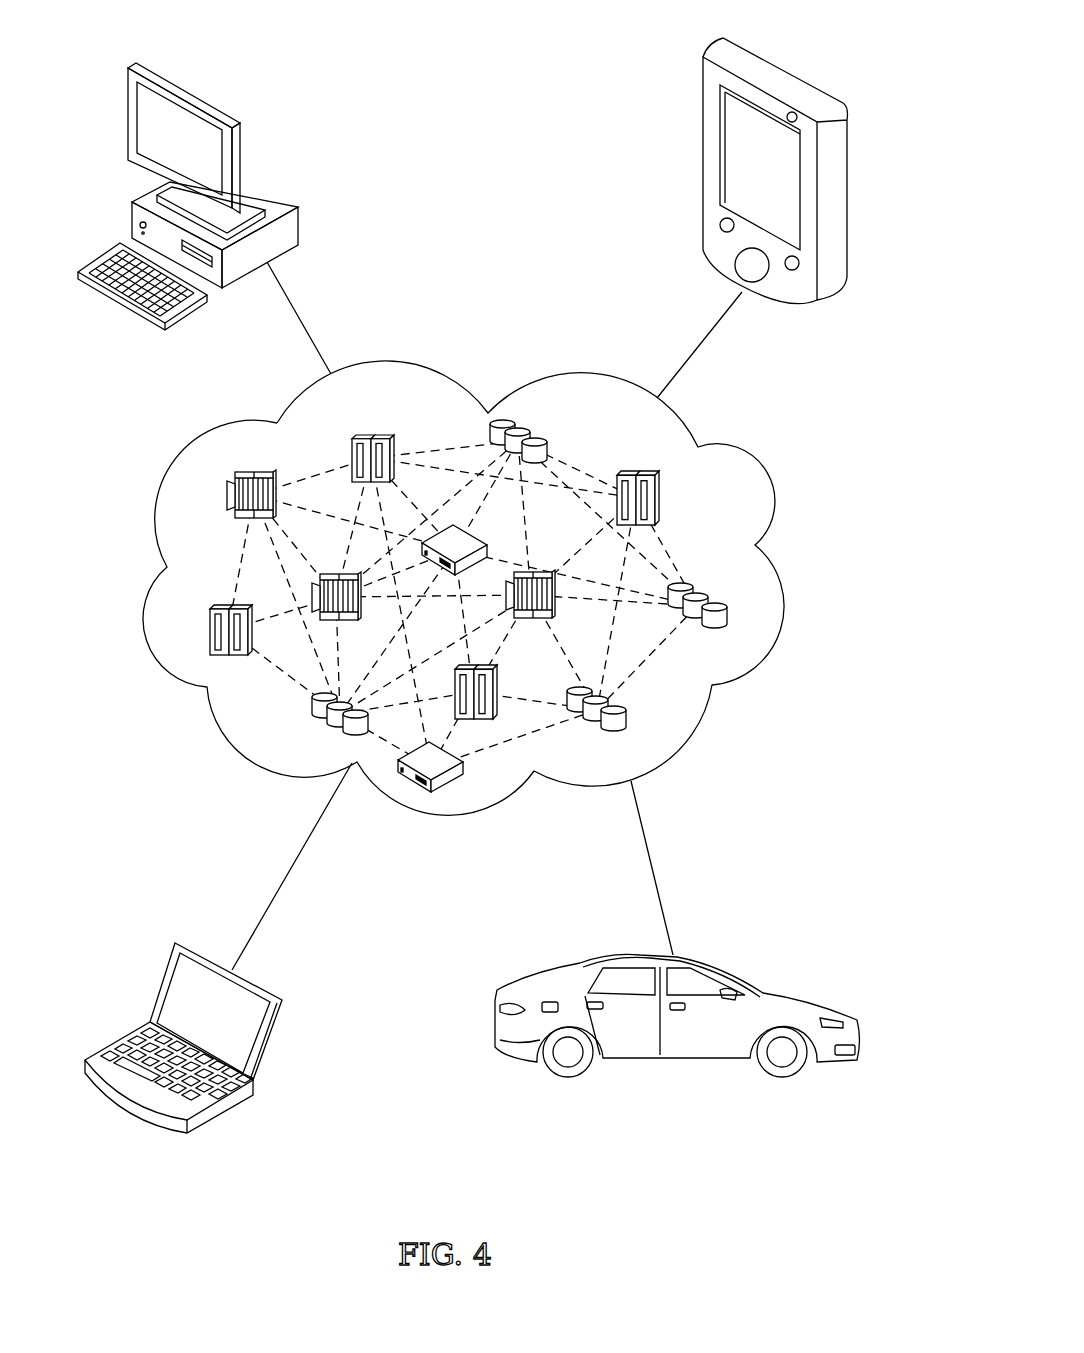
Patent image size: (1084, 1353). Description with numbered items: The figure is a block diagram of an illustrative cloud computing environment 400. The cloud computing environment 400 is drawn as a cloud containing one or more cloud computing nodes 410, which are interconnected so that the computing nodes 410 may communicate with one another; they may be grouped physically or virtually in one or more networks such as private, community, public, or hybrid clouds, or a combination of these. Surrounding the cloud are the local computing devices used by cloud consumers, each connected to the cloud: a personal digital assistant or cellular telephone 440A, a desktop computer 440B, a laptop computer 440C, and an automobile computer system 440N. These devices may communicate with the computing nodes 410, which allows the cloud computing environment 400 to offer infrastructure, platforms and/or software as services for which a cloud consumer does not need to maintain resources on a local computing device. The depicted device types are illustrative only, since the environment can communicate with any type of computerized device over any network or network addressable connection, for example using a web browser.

The cloud computing environment 400 is at (757, 663).
The cloud computing nodes 410 is at (706, 521).
The personal digital assistant (PDA) or cellular telephone 440A is at (700, 120).
The desktop computer 440B is at (300, 222).
The laptop computer 440C is at (283, 1010).
The automobile computer system 440N is at (853, 1018).